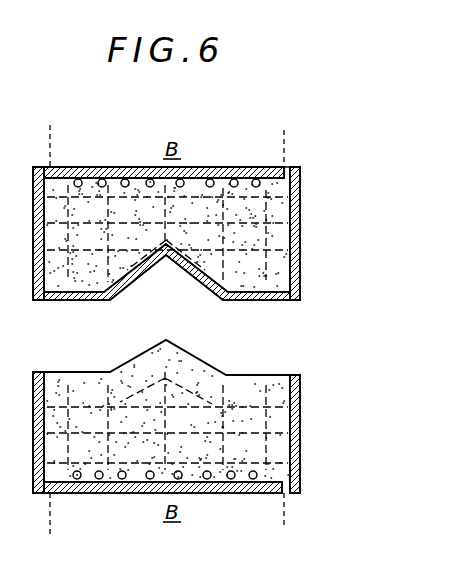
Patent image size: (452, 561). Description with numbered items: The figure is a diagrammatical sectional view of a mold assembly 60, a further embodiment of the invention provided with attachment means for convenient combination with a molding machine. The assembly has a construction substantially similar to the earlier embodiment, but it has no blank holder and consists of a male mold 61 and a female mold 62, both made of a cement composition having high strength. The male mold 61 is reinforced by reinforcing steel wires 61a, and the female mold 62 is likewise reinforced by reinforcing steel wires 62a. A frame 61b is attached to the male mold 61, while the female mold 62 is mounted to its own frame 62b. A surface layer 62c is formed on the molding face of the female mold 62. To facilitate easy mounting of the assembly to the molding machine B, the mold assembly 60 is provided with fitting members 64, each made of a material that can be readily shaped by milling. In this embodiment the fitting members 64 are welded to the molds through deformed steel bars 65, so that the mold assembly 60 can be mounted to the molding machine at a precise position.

The mold assembly 60 is at (240, 128).
The male mold 61 is at (145, 418).
The reinforcing steel wires 61a is at (263, 419).
The frame 61b is at (283, 465).
The female mold 62 is at (124, 210).
The reinforcing steel wires 62a is at (276, 257).
The frame 62b is at (300, 190).
The surface layer 62c is at (203, 285).
The fitting members 64 is at (273, 180).
The deformed steel bars 65 is at (258, 186).